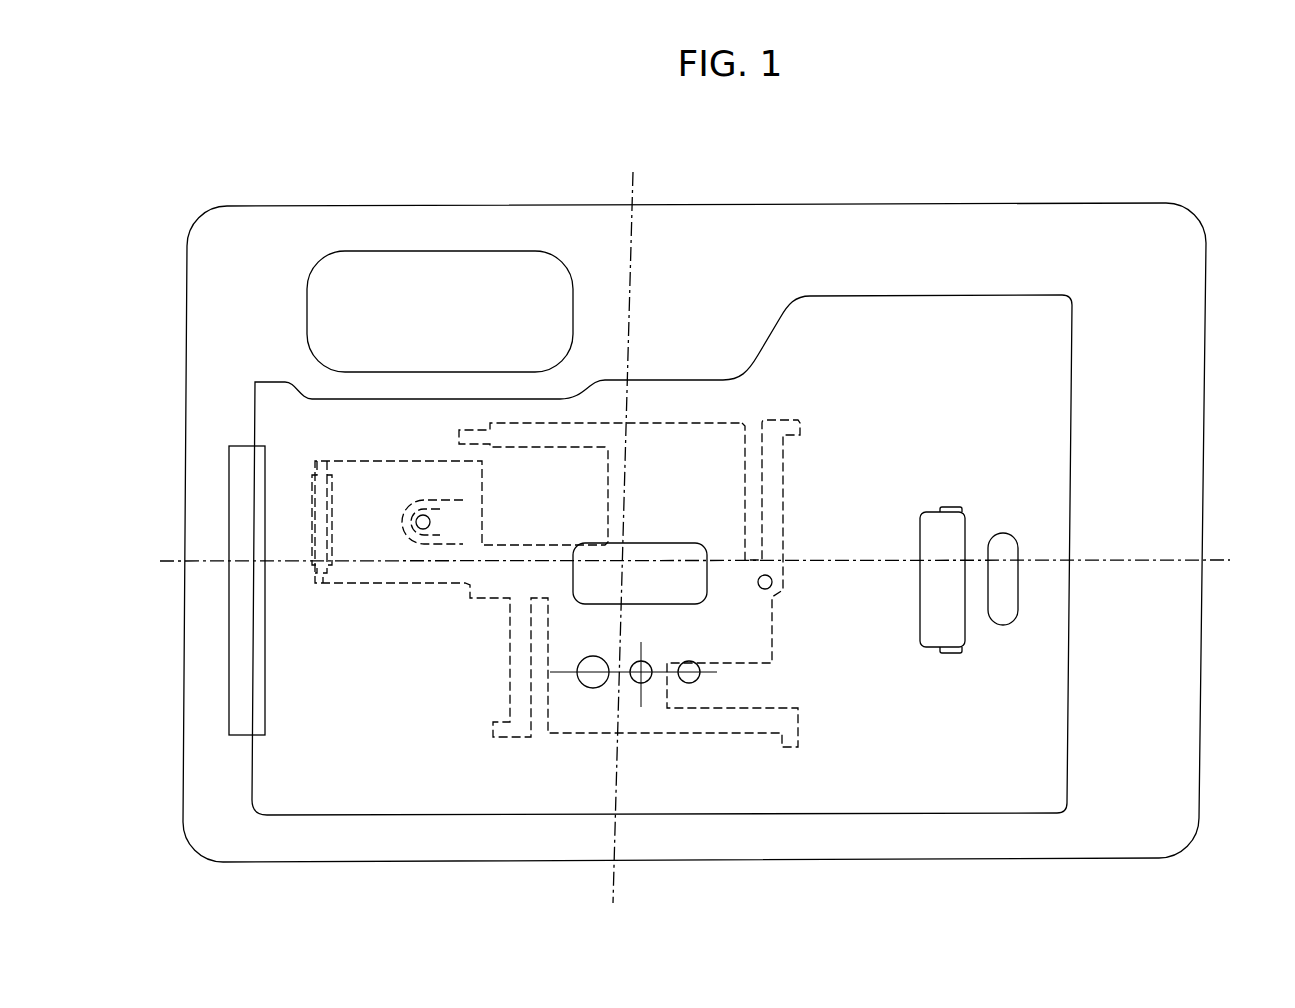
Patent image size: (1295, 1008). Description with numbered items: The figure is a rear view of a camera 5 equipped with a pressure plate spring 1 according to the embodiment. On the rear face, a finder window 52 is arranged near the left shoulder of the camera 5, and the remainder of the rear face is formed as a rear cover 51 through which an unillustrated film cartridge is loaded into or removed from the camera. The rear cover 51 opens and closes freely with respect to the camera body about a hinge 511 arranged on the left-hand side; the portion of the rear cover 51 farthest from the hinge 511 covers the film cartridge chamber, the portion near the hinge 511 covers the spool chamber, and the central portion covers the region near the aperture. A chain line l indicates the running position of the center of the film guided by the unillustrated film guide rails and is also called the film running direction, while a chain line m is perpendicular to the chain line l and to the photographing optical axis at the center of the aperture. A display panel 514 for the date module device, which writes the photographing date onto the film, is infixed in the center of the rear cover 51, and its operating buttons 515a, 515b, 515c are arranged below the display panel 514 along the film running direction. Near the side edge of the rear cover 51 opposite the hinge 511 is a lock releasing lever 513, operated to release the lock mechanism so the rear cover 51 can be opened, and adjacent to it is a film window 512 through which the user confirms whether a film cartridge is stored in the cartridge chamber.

The pressure plate spring 1 is at (720, 422).
The camera 5 is at (747, 203).
The rear cover 51 is at (959, 295).
The finder window 52 is at (516, 251).
The hinge 511 is at (229, 532).
The film window 512 is at (965, 640).
The lock releasing lever 513 is at (1018, 555).
The display panel 514 is at (573, 597).
The operating button 515a is at (590, 688).
The operating button 515b is at (645, 683).
The operating button 515c is at (689, 683).
The chain line m is at (628, 526).
The chain line l is at (704, 562).